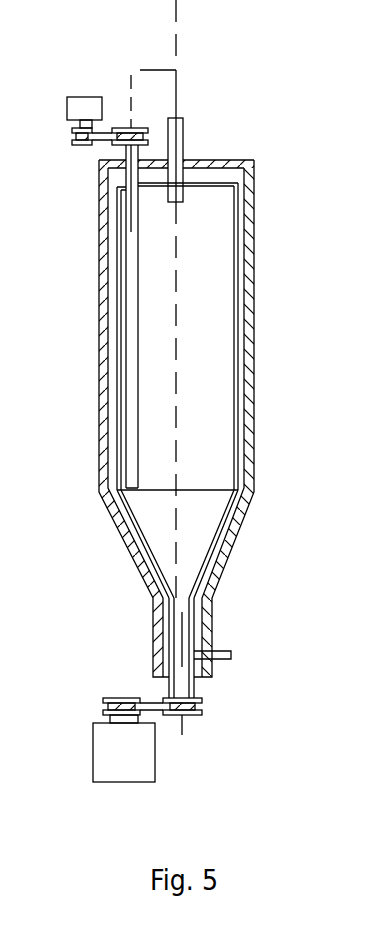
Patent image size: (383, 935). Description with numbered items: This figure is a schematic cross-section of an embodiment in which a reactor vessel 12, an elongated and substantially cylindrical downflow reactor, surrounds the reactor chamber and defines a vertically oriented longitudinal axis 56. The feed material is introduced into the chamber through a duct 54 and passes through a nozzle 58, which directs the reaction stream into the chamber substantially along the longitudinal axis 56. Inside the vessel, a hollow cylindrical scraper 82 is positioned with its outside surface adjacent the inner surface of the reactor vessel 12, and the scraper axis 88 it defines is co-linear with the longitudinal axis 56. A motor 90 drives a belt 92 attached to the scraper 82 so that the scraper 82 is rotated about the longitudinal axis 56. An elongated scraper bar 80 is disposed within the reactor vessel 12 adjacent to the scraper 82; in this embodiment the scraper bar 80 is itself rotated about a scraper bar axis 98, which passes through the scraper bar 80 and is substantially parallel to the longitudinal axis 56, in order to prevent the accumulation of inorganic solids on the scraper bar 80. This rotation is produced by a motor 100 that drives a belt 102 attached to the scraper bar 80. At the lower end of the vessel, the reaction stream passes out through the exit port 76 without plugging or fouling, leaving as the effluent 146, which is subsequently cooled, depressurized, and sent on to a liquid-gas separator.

The reactor vessel 12 is at (254, 298).
The duct 54 is at (140, 70).
The longitudinal axis 56 is at (177, 28).
The scraper axis 88 is at (176, 33).
The nozzle 58 is at (185, 125).
The exit port 76 is at (217, 662).
The scraper bar 80 is at (140, 292).
The scraper 82 is at (115, 330).
The motor 90 is at (155, 758).
The belt 92 is at (150, 698).
The scraper bar axis 98 is at (128, 75).
The motor 100 is at (86, 97).
The belt 102 is at (92, 146).
The effluent 146 is at (266, 657).